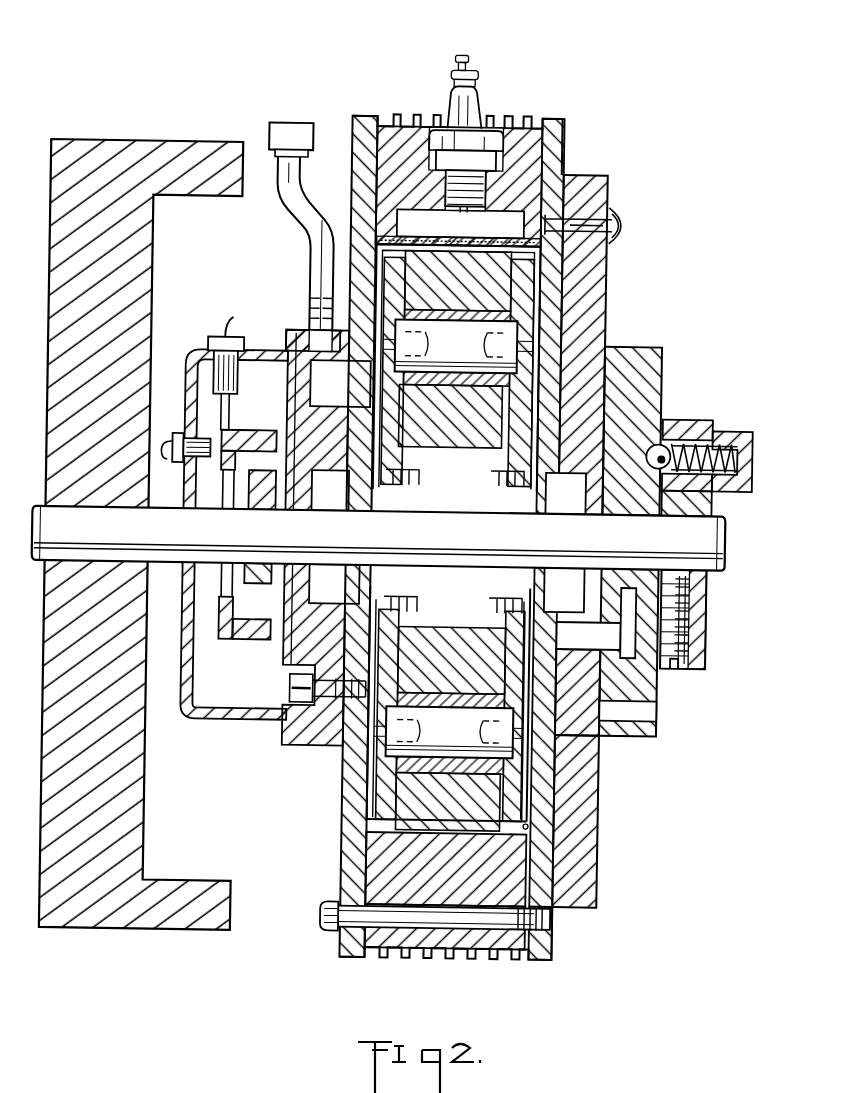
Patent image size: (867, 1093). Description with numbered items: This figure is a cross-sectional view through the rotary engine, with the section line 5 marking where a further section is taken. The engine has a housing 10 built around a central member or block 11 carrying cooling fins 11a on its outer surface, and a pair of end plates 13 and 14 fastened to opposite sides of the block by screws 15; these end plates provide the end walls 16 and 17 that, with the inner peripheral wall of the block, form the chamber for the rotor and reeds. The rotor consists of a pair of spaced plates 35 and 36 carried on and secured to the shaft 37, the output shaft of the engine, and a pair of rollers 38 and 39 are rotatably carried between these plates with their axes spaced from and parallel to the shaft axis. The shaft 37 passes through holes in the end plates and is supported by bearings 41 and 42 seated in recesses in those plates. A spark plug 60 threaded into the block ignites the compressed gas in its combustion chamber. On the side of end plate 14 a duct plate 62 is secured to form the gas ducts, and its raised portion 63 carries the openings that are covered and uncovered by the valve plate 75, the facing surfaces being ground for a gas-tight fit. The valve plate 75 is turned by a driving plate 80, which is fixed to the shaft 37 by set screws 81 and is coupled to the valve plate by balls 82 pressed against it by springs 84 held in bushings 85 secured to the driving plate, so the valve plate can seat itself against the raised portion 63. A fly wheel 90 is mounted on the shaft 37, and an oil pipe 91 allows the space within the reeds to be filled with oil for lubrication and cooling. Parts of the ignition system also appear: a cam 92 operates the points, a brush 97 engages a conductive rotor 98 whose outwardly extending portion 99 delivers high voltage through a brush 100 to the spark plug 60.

The section line 5- 5 is at (450, 28).
The housing 10 is at (339, 100).
The central member or block 11 is at (454, 945).
The cooling fins 11a is at (405, 958).
The end plate 13 is at (357, 850).
The end plate 14 is at (559, 952).
The screws 15 is at (338, 927).
The end wall 16 is at (369, 825).
The end wall 17 is at (534, 825).
The plate 35 is at (386, 395).
The plate 36 is at (516, 394).
The shaft 37 is at (717, 541).
The roller 38 is at (470, 247).
The roller 39 is at (458, 822).
The bearing 41 is at (320, 600).
The bearing 42 is at (575, 478).
The spark plug 60 is at (470, 101).
The duct plate 62 is at (607, 893).
The raised portion 63 is at (613, 734).
The valve plate 75 is at (656, 681).
The driving plate 80 is at (708, 624).
The set screws 81 is at (692, 660).
The balls 82 is at (648, 437).
The springs 84 is at (728, 435).
The bushings 85 is at (752, 480).
The fly wheel 90 is at (113, 925).
The oil pipe 91 is at (287, 212).
The cam 92 is at (275, 455).
The brush 97 is at (184, 476).
The conductive rotor 98 is at (209, 642).
The outwardly extending portion 99 is at (227, 411).
The brush 100 is at (234, 381).